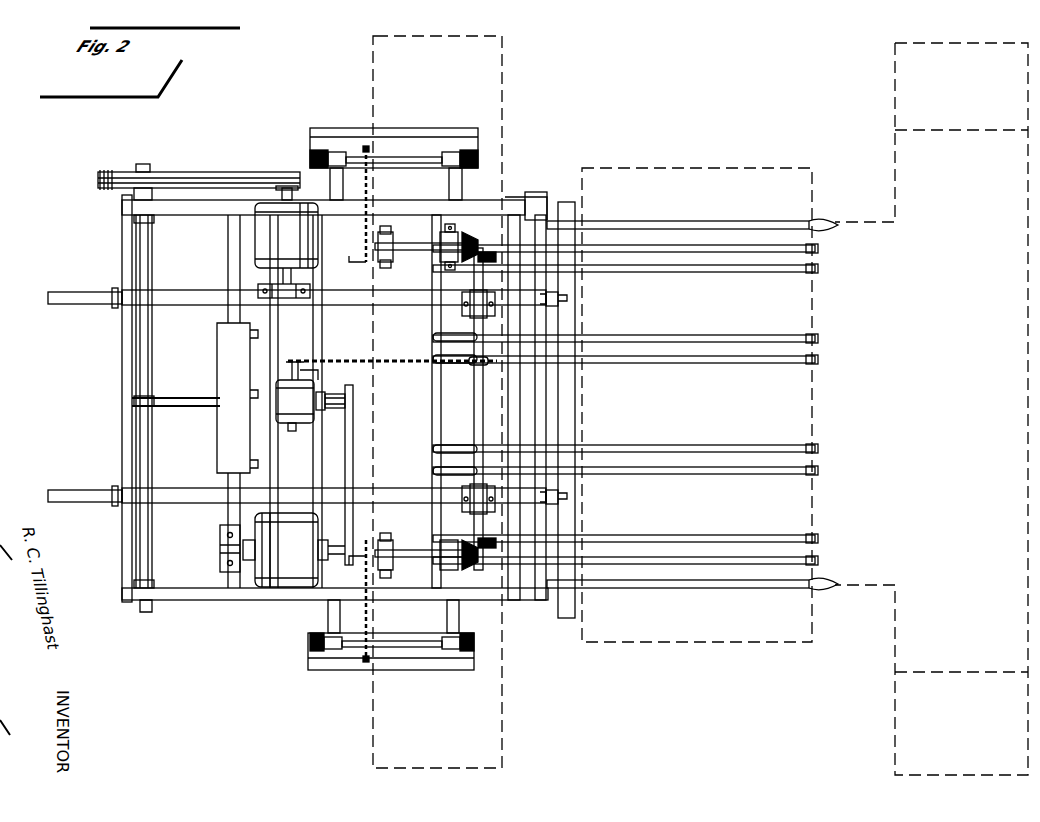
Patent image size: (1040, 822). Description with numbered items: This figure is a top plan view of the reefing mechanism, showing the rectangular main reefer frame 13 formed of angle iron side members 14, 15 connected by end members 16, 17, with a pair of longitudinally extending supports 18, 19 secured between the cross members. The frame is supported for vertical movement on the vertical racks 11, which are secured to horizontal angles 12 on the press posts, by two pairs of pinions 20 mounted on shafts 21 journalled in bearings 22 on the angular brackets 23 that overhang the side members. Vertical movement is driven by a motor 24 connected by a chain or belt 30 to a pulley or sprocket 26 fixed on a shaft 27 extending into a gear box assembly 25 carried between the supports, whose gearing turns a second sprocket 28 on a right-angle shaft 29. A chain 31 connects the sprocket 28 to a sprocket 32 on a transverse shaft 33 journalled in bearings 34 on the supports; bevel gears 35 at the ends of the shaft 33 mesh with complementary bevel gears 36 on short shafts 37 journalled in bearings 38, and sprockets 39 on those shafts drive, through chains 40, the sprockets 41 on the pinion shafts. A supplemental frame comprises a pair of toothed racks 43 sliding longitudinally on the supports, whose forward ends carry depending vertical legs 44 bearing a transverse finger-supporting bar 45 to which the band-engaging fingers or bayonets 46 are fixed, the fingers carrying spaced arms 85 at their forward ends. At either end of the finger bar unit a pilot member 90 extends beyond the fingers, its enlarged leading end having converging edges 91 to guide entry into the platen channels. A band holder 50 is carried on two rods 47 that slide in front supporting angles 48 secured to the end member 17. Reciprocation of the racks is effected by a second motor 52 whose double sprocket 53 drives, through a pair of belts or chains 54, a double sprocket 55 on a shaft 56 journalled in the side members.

The vertical racks 11 is at (312, 656).
The horizontal angles 12 is at (330, 130).
The main reefer frame 13 is at (181, 622).
The side member 14 is at (256, 600).
The side member 15 is at (518, 202).
The end member 16 is at (122, 362).
The end member 17 is at (530, 408).
The longitudinally extending support 18 is at (170, 492).
The longitudinally extending support 19 is at (176, 292).
The pinions 20 is at (312, 158).
The pinion-supporting shafts 21 is at (426, 164).
The bearings 22 is at (350, 156).
The angular brackets 23 is at (330, 184).
The motor 24 is at (282, 550).
The gear box assembly 25 is at (295, 405).
The pulley or sprocket 26 is at (330, 400).
The shaft 27 is at (336, 410).
The second sprocket 28 is at (290, 362).
The shaft 29 is at (320, 372).
The chain or belt 30 is at (353, 466).
The chain 31 is at (410, 360).
The sprocket 32 is at (474, 366).
The transverse shaft 33 is at (474, 412).
The bearings 34 is at (494, 298).
The bevel gears 35 is at (496, 258).
The complementary bevel gears 36 is at (478, 246).
The short shafts 37 is at (424, 250).
The bearings 38 is at (393, 240).
The sprockets 39 is at (365, 260).
The chains 40 is at (366, 196).
The sprockets 41 is at (370, 150).
The toothed racks 43 is at (68, 292).
The depending vertical legs 44 is at (424, 320).
The finger-supporting bar 45 is at (432, 414).
The band-engaging fingers or bayonets 46 is at (726, 268).
The rods 47 is at (562, 304).
The front supporting structure 48 is at (560, 294).
The band holder 50 is at (574, 414).
The second motor 52 is at (286, 250).
The pulley or double sprocket 53 is at (290, 186).
The belts or chains 54 is at (216, 176).
The double sprocket or pulley 55 is at (112, 172).
The shaft 56 is at (152, 240).
The spaced arms 85 is at (818, 270).
The finger guide or pilot member 90 is at (704, 222).
The converging edges 91 is at (826, 222).